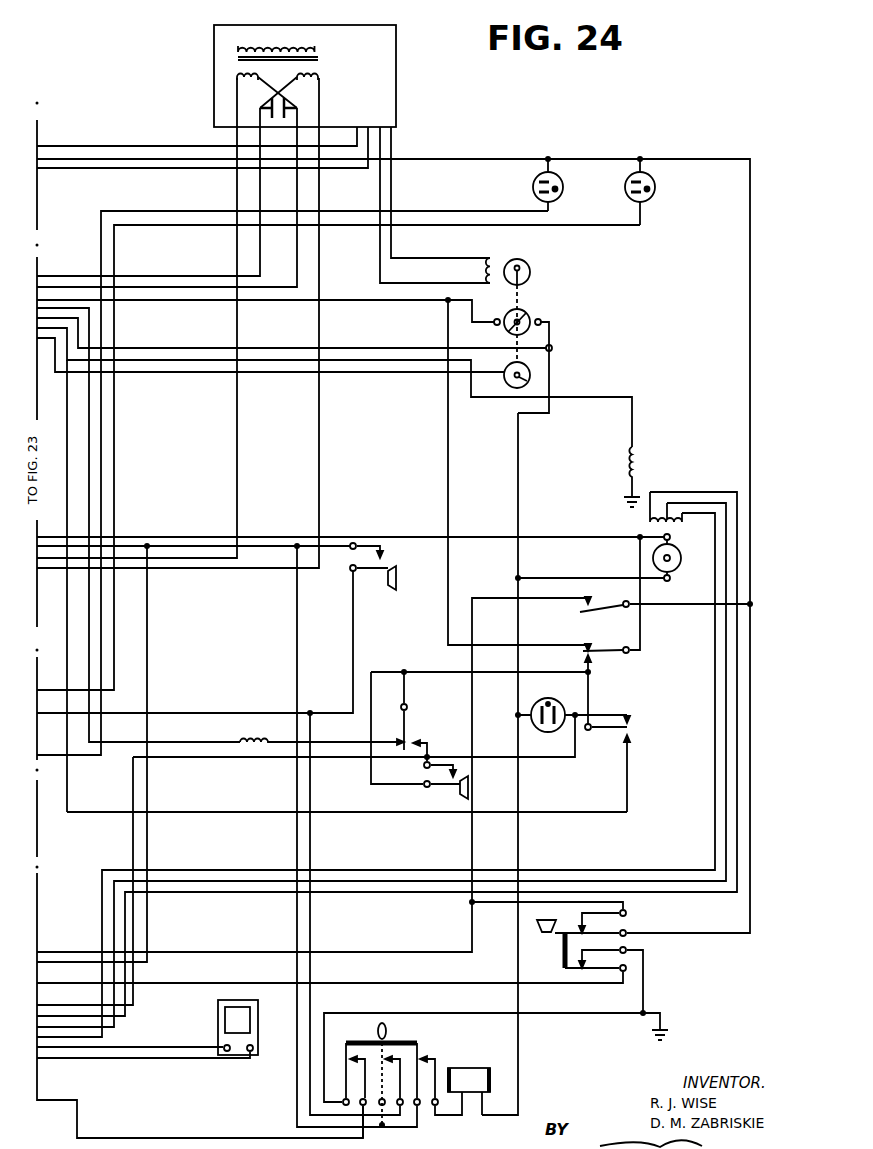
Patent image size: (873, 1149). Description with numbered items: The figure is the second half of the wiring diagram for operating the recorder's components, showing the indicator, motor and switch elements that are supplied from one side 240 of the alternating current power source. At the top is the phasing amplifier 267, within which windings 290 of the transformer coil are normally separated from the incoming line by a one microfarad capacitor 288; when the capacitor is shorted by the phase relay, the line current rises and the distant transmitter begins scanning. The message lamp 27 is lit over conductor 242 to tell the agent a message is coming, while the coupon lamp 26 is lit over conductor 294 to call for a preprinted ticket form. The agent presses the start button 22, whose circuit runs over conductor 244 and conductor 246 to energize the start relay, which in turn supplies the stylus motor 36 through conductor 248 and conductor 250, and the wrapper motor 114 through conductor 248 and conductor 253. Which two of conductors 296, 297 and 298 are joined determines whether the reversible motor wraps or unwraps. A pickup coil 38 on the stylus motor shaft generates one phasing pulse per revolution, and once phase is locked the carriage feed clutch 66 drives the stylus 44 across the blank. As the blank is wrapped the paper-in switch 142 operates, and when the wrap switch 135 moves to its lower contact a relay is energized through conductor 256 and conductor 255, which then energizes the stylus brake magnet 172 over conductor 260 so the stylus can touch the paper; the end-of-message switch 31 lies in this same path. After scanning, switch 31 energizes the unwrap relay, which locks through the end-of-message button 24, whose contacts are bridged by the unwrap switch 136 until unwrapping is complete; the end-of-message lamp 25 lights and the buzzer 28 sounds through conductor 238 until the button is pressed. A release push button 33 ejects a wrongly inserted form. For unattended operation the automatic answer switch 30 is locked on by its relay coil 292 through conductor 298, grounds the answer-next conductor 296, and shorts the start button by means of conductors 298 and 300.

The phasing amplifier 267 is at (385, 100).
The windings of the transformer coil 290 is at (237, 74).
The capacitor 288 is at (286, 116).
The conductor 240 is at (100, 152).
The message lamp 27 is at (564, 192).
The coupon lamp 26 is at (656, 192).
The conductor 294 is at (614, 230).
The pickup coil 38 is at (494, 250).
The conductor 250 is at (396, 302).
The stylus motor 36 is at (532, 312).
The conductor 248 is at (420, 350).
The conductor 260 is at (90, 332).
The stylus 44 is at (524, 386).
The carriage feed clutch 66 is at (637, 470).
The conductor 253 is at (450, 537).
The wrapper motor 114 is at (655, 563).
The start button 22 is at (388, 550).
The unwrap switch 136 is at (590, 600).
The conductor 255 is at (641, 645).
The wrap switch 135 is at (580, 652).
The conductor 244 is at (148, 680).
The conductor 246 is at (268, 712).
The stylus brake magnet 172 is at (243, 740).
The end-of-message switch 31 is at (426, 745).
The release push button 33 is at (458, 787).
The end-of-message lamp 25 is at (573, 690).
The paper-in switch 142 is at (627, 718).
The conductor 242 is at (68, 762).
The conductor 256 is at (244, 812).
The conductor 296 is at (648, 870).
The conductor 297 is at (420, 893).
The conductor 298 is at (297, 932).
The conductor 300 is at (310, 937).
The end-of-message push button 24 is at (560, 936).
The buzzer 28 is at (216, 1029).
The conductor 238 is at (77, 1060).
The automatic answer switch 30 is at (434, 1046).
The relay coil 292 is at (470, 1068).